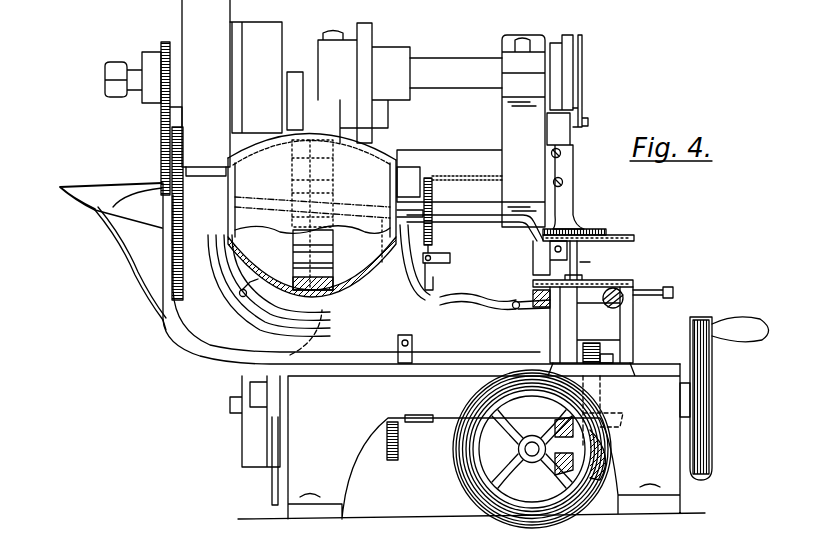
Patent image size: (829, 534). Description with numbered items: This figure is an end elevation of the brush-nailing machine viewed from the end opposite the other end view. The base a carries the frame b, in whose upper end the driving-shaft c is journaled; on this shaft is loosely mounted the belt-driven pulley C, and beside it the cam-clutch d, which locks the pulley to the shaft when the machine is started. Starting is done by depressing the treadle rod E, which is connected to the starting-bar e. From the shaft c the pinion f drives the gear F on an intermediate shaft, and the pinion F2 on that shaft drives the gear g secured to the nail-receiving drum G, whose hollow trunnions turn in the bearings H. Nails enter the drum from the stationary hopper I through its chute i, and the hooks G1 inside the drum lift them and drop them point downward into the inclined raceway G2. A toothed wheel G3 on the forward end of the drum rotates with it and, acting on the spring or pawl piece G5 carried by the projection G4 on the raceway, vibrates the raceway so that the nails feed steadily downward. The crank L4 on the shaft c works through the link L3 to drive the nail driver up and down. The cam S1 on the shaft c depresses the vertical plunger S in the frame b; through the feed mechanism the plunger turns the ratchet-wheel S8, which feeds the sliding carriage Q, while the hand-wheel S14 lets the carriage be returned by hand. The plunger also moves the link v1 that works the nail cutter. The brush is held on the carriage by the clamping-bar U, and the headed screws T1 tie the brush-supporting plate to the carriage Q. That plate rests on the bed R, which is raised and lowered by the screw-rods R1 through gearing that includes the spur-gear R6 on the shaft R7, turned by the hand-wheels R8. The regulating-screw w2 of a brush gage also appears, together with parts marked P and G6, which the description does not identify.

The pulley C is at (206, 88).
The cam-clutch d is at (266, 77).
The cam S1 is at (380, 60).
The vertical plunger S is at (384, 130).
The driving-shaft c is at (124, 58).
The frame b is at (471, 131).
The link L3 is at (580, 80).
The crank L4 is at (584, 45).
The pinion f is at (160, 42).
The pinion F2 is at (184, 150).
The gear F is at (160, 145).
The stationary hopper I is at (113, 249).
The chute i is at (137, 204).
The nail-receiving drum G is at (312, 215).
The hooks or projections G1 is at (331, 278).
The toothed wheel G3 is at (433, 185).
The projection G4 is at (450, 260).
The spring or pawl piece G5 is at (434, 283).
The inclined raceway G2 is at (488, 217).
The rack P is at (612, 230).
The plate G6 is at (637, 240).
The clamping plate or bar U is at (604, 283).
The sliding carriage Q is at (628, 318).
The bed R is at (608, 312).
The screw-rods R1 is at (603, 348).
The regulating-screw w2 is at (674, 293).
The headed screws T1 is at (607, 302).
The link v1 is at (474, 329).
The crank or hand-wheel S14 is at (707, 346).
The bearings H is at (421, 279).
The gear g is at (309, 280).
The base a is at (471, 441).
The bar e is at (268, 455).
The rod E is at (272, 498).
The ratchet-wheel S8 is at (399, 452).
The cranks or hand-wheels R8 is at (470, 480).
The shaft R7 is at (524, 450).
The spur-gear R6 is at (572, 439).